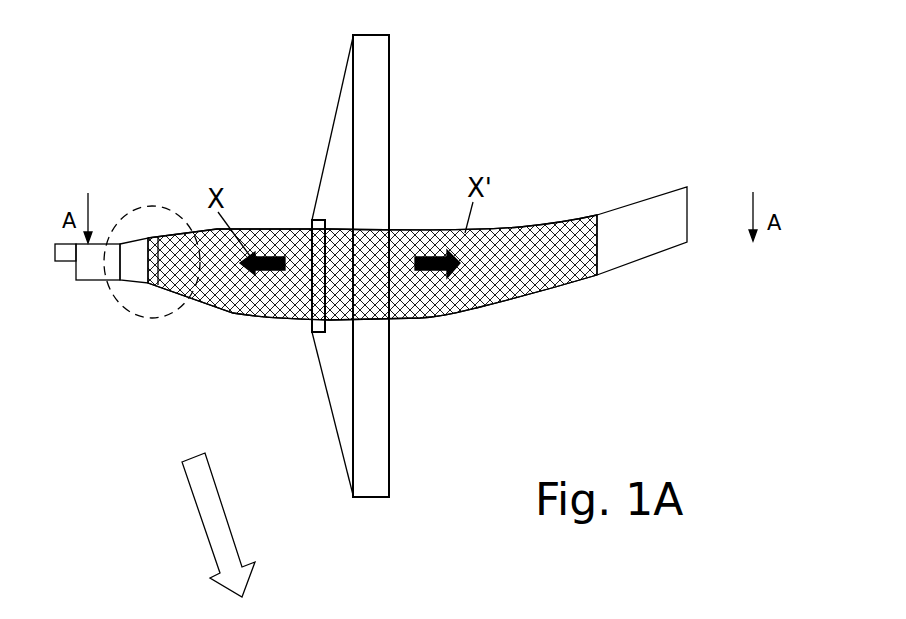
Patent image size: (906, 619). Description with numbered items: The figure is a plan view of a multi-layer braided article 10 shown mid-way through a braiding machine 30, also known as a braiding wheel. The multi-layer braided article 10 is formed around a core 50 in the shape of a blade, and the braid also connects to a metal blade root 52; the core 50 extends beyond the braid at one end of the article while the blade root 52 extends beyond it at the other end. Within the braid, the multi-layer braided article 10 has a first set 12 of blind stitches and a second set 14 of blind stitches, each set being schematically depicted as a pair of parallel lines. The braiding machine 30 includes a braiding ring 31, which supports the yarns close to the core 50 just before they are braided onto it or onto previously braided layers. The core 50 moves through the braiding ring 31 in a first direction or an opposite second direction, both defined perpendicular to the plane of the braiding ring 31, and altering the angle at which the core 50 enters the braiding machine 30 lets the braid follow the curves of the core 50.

The multi-layer braided article 10 is at (548, 237).
The first set of blind stitches 12 is at (592, 275).
The second set of blind stitches 14 is at (150, 287).
The braiding machine 30 is at (390, 57).
The braiding ring 31 is at (311, 220).
The core 50 is at (688, 198).
The blade root 52 is at (100, 244).